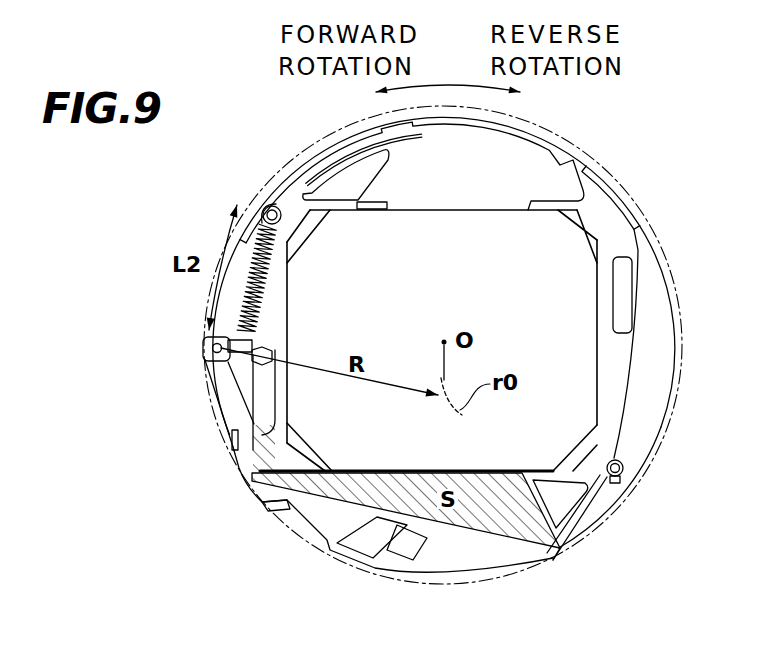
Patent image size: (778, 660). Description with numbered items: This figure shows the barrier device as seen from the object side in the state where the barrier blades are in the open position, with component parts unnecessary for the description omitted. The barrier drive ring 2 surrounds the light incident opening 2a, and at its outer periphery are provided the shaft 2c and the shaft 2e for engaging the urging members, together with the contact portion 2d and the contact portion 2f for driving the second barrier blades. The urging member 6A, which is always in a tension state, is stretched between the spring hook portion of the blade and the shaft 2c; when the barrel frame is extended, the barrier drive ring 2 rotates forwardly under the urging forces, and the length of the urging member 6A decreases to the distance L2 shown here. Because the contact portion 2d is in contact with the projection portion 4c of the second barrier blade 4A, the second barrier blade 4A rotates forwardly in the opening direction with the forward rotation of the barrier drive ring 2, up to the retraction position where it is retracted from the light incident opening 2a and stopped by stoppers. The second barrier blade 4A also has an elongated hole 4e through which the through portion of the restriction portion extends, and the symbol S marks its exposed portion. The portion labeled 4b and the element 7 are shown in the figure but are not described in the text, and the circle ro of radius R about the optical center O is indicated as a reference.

The barrier drive ring 2 is at (525, 152).
The light incident opening 2a is at (445, 212).
The shaft 2c is at (264, 211).
The contact portion 2d is at (266, 352).
The shaft 2e is at (626, 470).
The contact portion 2f is at (624, 312).
The second barrier blade 4A is at (335, 523).
The lever arm 4b is at (208, 356).
The projection portion 4c is at (258, 372).
The elongated hole 4e is at (378, 540).
The urging member 6A is at (212, 343).
The ring 7 is at (614, 515).